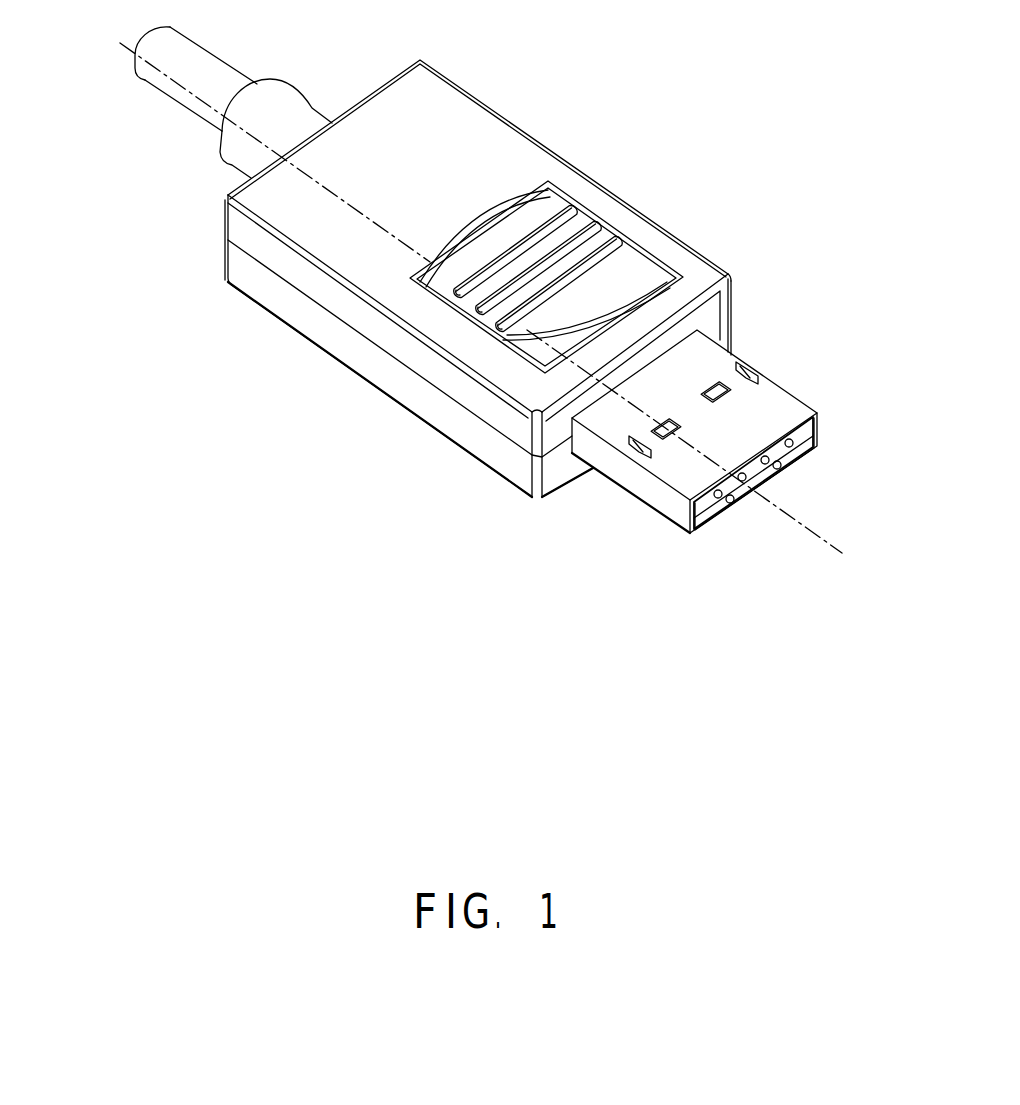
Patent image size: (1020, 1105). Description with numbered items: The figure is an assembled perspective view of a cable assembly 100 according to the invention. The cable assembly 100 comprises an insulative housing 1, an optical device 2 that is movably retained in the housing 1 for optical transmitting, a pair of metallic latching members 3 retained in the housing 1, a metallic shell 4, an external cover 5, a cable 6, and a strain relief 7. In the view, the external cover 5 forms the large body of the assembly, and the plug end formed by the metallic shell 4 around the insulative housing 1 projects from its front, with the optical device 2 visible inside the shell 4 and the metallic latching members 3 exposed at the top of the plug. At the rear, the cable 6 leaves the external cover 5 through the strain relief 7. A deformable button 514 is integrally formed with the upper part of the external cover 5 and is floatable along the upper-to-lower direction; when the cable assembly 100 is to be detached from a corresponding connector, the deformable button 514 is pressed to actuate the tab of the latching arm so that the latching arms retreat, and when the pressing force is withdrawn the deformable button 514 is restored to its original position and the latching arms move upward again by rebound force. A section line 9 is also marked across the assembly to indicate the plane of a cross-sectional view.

The cable assembly 100 is at (478, 260).
The external cover 5 is at (423, 124).
The deformable button 514 is at (595, 292).
The cable 6 is at (205, 80).
The strain relief 7 is at (283, 118).
The insulative housing 1 is at (798, 445).
The optical device 2 is at (720, 497).
The metallic latching members 3 is at (742, 365).
The metallic shell 4 is at (688, 467).
The section line 9- 9 is at (108, 37).